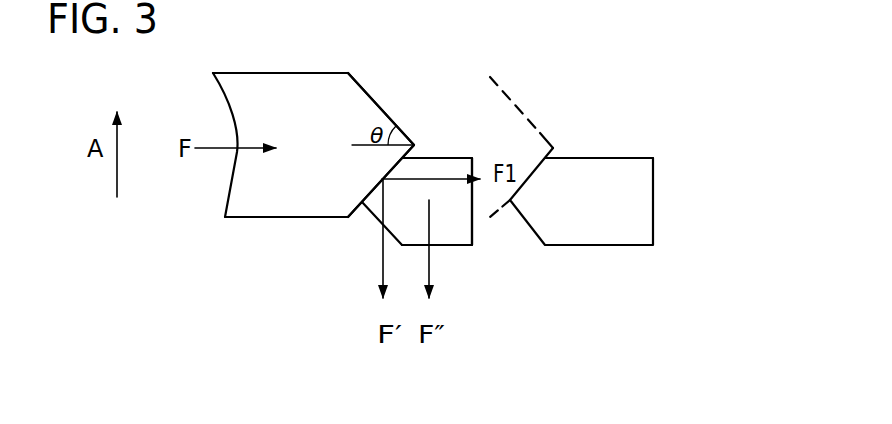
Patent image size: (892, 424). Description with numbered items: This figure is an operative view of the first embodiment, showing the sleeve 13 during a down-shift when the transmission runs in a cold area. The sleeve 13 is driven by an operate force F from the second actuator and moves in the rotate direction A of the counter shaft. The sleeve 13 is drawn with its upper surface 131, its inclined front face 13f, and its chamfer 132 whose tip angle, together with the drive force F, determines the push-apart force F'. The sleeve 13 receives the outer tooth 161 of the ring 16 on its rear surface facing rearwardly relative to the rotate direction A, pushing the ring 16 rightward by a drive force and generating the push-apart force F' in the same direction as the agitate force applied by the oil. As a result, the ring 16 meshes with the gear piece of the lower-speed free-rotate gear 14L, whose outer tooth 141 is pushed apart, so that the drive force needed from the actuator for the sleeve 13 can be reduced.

The sleeve 13 is at (190, 176).
The upper surface of blade 131 is at (280, 93).
The chamfer 132 is at (363, 163).
The inclined front face of blade 13f is at (371, 97).
The ring 16 is at (472, 301).
The outer tooth of the ring 161 is at (442, 227).
The free-rotate gear 14L is at (668, 184).
The outer tooth of the gear piece 141 is at (628, 168).